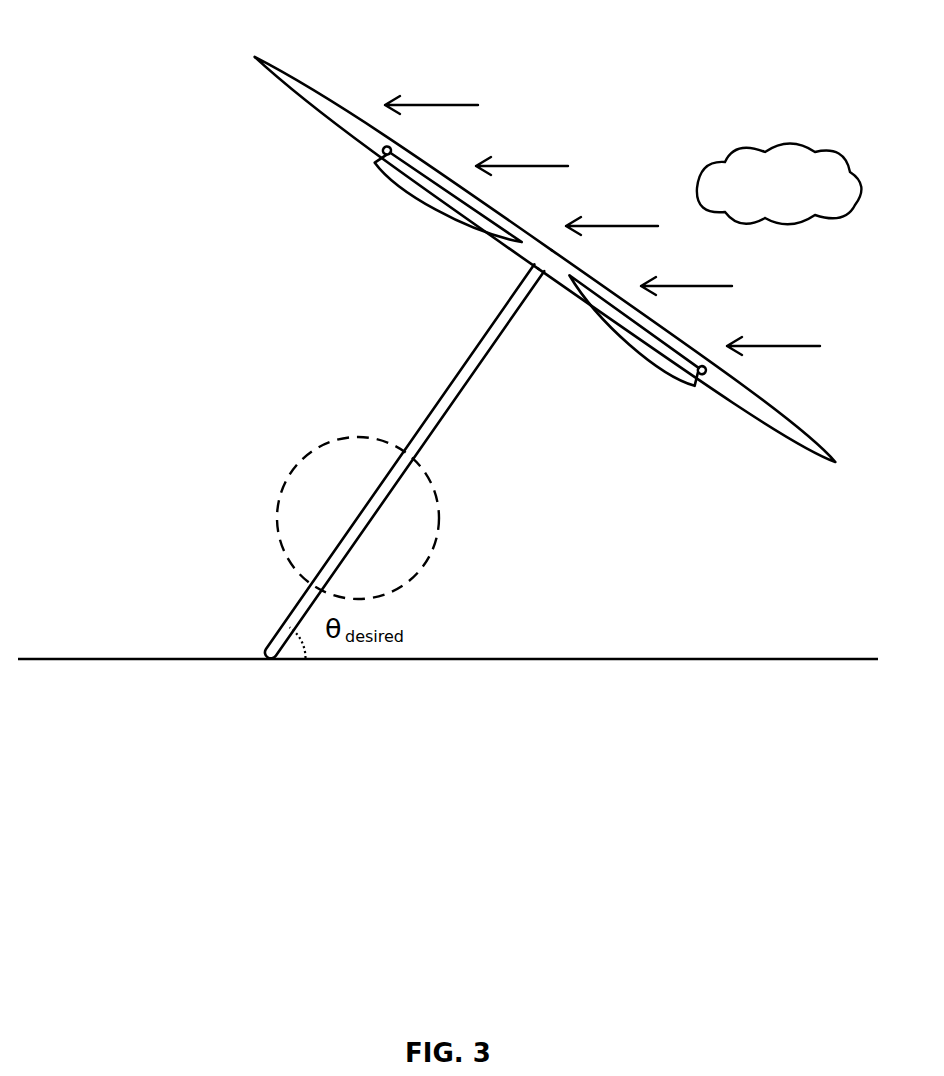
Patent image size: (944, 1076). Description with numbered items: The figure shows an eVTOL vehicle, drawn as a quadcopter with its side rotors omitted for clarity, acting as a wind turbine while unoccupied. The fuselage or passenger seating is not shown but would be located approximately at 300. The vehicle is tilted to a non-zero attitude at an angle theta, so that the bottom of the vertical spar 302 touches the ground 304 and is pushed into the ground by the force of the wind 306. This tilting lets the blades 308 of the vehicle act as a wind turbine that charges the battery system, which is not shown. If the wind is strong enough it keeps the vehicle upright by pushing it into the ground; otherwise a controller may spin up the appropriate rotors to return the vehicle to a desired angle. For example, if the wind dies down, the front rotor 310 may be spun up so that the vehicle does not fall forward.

The fuselage location 300 is at (360, 437).
The vertical spar 302 is at (484, 383).
The ground 304 is at (615, 658).
The wind 306 is at (780, 148).
The blades 308 is at (300, 72).
The front rotor 310 is at (792, 440).